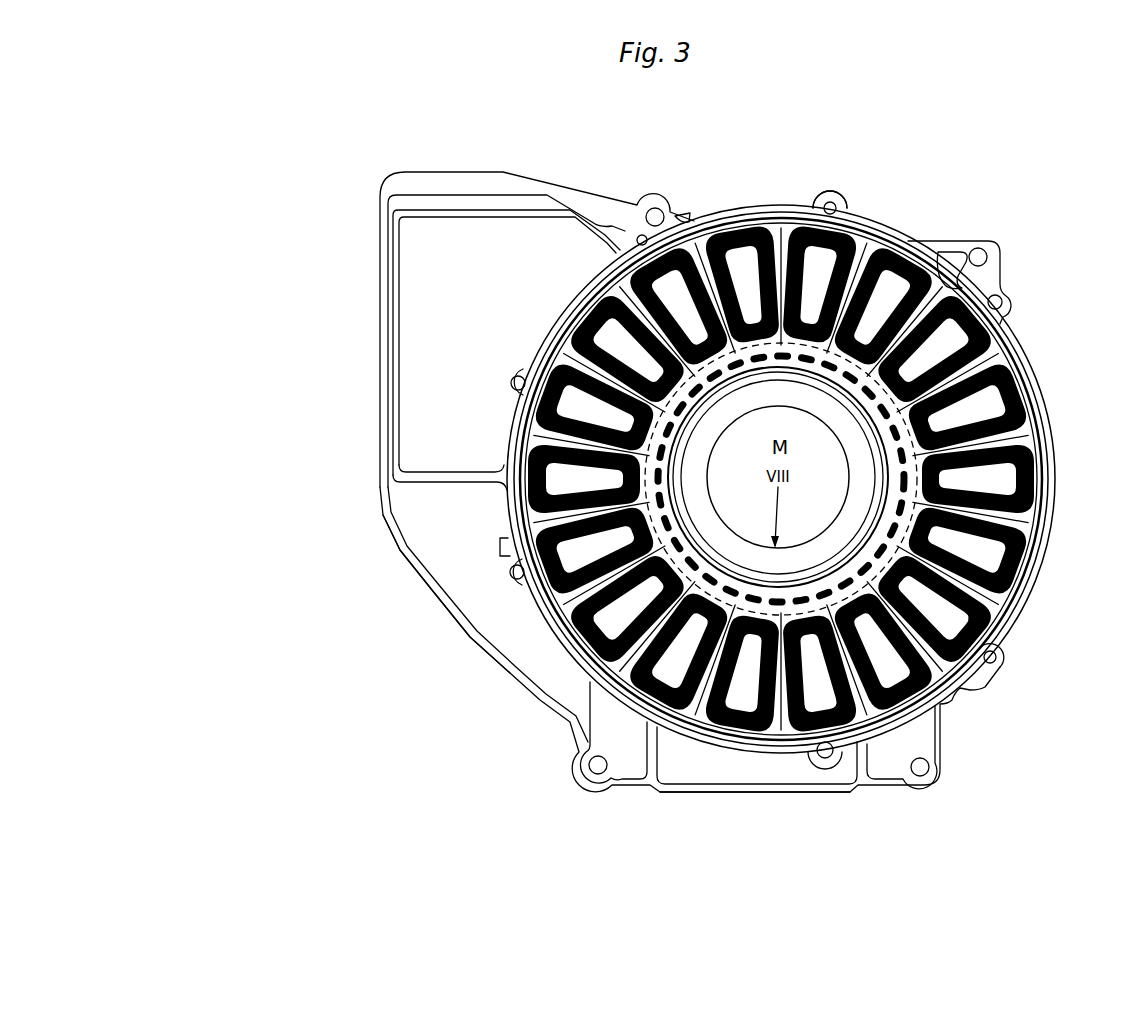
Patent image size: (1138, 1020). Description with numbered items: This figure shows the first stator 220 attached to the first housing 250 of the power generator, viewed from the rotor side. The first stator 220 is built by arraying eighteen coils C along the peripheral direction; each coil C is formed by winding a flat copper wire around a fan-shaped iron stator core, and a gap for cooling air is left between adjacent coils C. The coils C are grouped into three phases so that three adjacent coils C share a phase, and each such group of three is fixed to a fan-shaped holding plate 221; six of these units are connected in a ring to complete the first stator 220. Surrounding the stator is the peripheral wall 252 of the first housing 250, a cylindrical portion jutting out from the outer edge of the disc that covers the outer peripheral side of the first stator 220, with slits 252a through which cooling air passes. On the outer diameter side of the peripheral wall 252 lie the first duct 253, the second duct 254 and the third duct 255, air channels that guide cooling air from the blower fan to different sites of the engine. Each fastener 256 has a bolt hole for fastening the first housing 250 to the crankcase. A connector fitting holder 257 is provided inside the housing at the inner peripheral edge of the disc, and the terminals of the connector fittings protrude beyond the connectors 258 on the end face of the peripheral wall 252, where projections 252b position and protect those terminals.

The first stator 220 is at (781, 438).
The holding plate 221 is at (868, 248).
The first housing 250 is at (675, 492).
The peripheral wall 252 is at (1023, 353).
The slits 252a is at (970, 265).
The projections 252b is at (823, 207).
The first duct 253 is at (379, 348).
The second duct 254 is at (432, 590).
The third duct 255 is at (720, 792).
The fastener 256 is at (648, 202).
The connector fitting holder 257 is at (720, 226).
The connector 258 is at (848, 205).
The coil C is at (791, 437).